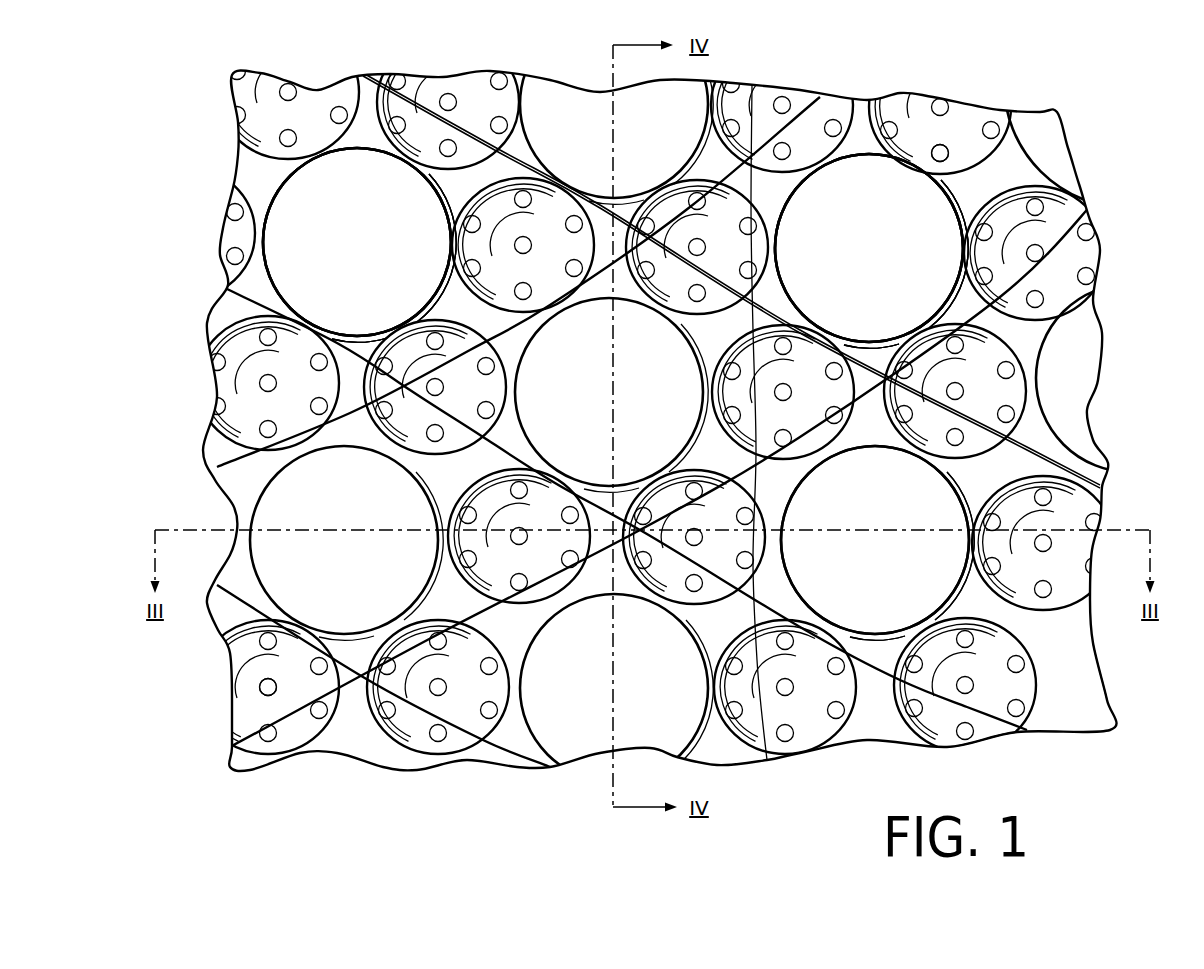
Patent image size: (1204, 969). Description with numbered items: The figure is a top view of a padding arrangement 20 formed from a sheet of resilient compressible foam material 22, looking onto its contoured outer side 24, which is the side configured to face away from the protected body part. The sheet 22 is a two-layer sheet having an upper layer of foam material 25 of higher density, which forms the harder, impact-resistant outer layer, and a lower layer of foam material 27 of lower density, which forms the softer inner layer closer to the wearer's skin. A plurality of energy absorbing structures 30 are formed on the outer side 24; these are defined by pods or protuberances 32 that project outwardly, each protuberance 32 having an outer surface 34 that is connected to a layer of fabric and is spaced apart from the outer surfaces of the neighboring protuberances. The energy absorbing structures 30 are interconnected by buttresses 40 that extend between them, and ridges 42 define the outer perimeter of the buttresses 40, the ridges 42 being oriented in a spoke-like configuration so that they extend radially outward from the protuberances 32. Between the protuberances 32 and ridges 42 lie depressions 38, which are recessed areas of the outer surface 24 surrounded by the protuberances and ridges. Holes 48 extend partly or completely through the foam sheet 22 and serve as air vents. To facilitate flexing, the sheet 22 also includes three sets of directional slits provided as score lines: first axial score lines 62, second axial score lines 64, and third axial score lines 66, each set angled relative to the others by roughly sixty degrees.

The padding arrangement 20 is at (1090, 130).
The sheet of resilient compressible material 22 is at (1093, 203).
The outer side 24 is at (1070, 373).
The upper layer of foam material 25 is at (1070, 697).
The lower layer of foam material 27 is at (987, 710).
The energy absorbing structures 30 is at (310, 232).
The protuberances 32 is at (727, 394).
The outer surface 34 is at (328, 188).
The depressions 38 is at (277, 362).
The buttresses 40 is at (477, 173).
The ridges 42 is at (500, 167).
The holes 48 is at (985, 125).
The first axial score lines 62 is at (678, 527).
The second axial score lines 64 is at (693, 560).
The third axial score lines 66 is at (748, 455).